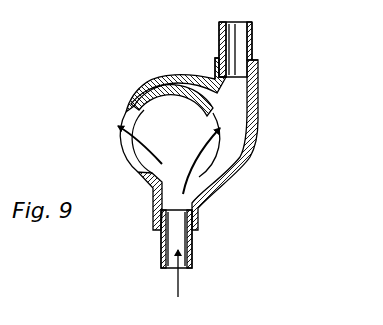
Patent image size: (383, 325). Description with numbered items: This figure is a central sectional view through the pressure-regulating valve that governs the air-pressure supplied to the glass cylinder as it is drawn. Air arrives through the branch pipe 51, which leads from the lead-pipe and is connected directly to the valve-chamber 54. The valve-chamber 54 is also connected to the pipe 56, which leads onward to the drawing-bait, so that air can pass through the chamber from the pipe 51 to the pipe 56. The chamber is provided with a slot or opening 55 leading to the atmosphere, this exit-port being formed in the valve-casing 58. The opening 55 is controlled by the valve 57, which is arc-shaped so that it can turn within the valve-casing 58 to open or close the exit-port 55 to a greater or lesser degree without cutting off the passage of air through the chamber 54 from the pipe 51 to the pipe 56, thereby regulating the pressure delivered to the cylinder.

The branch pipe 51 is at (193, 243).
The valve-chamber 54 is at (196, 172).
The slot or opening 55 is at (133, 146).
The pipe 56 is at (240, 45).
The valve 57 is at (142, 108).
The valve-casing 58 is at (253, 133).